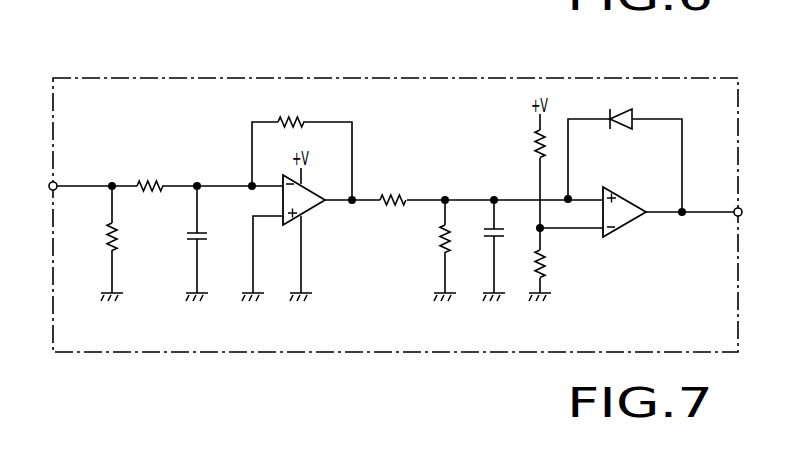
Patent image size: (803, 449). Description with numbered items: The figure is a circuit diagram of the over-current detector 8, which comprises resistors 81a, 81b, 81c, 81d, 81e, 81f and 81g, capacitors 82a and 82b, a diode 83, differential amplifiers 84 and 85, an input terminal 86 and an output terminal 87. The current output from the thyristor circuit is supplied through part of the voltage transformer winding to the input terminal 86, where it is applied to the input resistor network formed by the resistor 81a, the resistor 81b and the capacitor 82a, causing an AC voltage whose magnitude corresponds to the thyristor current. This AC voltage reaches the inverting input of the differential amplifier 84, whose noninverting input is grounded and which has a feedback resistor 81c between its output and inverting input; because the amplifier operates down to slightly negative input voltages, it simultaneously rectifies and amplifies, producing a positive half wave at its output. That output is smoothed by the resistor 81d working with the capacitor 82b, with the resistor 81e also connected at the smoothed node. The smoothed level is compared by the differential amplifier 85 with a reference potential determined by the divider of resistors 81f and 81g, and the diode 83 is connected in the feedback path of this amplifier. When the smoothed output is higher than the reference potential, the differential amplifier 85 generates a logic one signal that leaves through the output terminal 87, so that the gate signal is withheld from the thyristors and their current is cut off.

The over-current detector 8 is at (150, 78).
The input terminal 86 is at (50, 182).
The output terminal 87 is at (740, 207).
The resistor 81a is at (110, 238).
The resistor 81b is at (148, 182).
The resistor 81c is at (300, 120).
The resistor 81d is at (398, 194).
The resistor 81e is at (441, 243).
The resistor 81f is at (534, 147).
The resistor 81g is at (550, 265).
The capacitor 82a is at (193, 240).
The capacitor 82b is at (491, 240).
The diode 83 is at (634, 111).
The differential amplifier 84 is at (313, 209).
The differential amplifier 85 is at (619, 228).